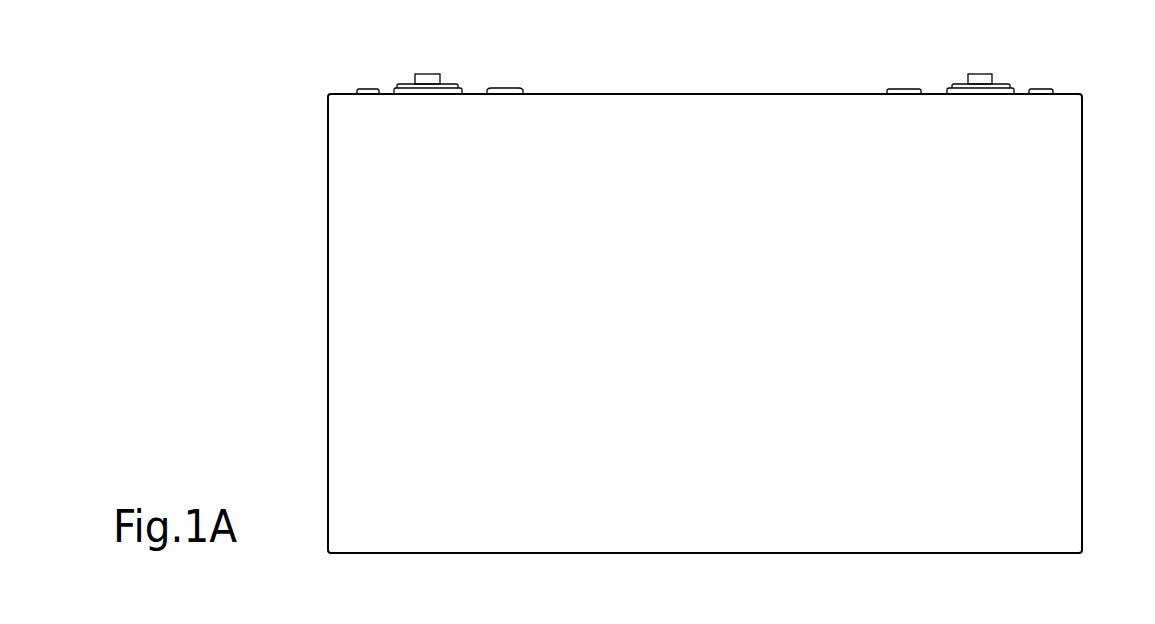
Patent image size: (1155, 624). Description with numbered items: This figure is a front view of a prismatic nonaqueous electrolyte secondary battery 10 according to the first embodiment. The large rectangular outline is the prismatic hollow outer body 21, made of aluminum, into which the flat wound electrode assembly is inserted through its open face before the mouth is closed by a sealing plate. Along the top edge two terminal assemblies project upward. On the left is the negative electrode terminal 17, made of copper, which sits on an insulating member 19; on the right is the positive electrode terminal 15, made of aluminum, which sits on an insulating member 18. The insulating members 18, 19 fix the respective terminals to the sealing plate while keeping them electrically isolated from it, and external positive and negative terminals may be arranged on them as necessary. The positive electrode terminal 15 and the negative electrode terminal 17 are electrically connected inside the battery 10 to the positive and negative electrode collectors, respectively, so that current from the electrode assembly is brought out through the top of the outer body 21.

The prismatic nonaqueous electrolyte secondary battery 10 is at (284, 99).
The positive electrode terminal 15 is at (973, 78).
The negative electrode terminal 17 is at (427, 79).
The insulating member 18 is at (1003, 84).
The insulating member 19 is at (453, 84).
The prismatic hollow outer body 21 is at (388, 274).